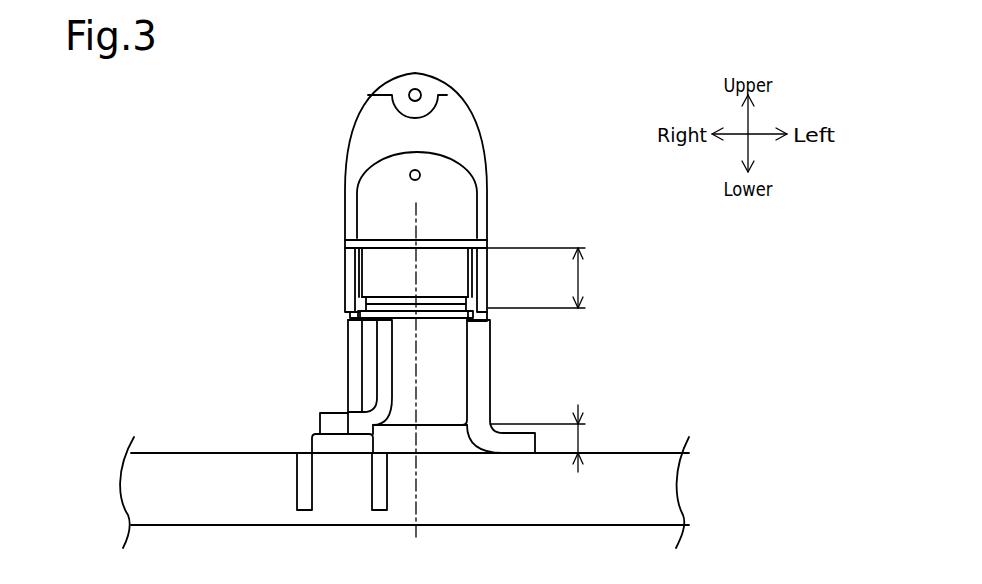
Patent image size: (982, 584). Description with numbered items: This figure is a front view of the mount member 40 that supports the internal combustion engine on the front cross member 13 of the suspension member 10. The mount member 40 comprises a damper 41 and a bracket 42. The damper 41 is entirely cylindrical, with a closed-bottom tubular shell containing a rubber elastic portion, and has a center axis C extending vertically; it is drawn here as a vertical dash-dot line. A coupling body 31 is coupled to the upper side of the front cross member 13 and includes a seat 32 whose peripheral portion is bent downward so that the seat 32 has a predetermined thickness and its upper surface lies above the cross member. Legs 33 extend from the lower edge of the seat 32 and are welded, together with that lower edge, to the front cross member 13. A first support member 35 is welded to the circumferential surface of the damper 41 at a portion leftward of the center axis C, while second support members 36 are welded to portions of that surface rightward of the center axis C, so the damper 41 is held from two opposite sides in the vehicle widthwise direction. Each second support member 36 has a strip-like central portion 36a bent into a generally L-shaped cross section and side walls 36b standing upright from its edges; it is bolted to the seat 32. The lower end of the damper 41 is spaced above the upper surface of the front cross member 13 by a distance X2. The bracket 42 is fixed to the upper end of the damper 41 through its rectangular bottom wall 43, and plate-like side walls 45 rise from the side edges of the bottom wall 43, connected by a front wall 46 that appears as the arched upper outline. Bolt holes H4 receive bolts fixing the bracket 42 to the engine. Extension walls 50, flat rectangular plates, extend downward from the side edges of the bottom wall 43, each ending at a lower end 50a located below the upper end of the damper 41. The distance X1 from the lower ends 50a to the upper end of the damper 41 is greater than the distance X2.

The suspension member 10 is at (168, 425).
The front cross member 13 is at (643, 452).
The coupling body 31 is at (291, 467).
The seat 32 is at (312, 436).
The legs 33 is at (304, 512).
The first support member 35 is at (477, 454).
The second support member 36 is at (260, 352).
The central portion 36a is at (372, 364).
The side walls 36b is at (334, 426).
The mount member 40 is at (302, 254).
The damper 41 is at (446, 371).
The bracket 42 is at (485, 102).
The bottom wall 43 is at (447, 240).
The side walls 45 is at (345, 200).
The front wall 46 is at (382, 131).
The extension walls 50 is at (345, 275).
The lower end 50a is at (345, 317).
The bolt holes H4 is at (424, 100).
The distance X1 is at (548, 278).
The distance X2 is at (549, 438).
The center axis C is at (417, 385).